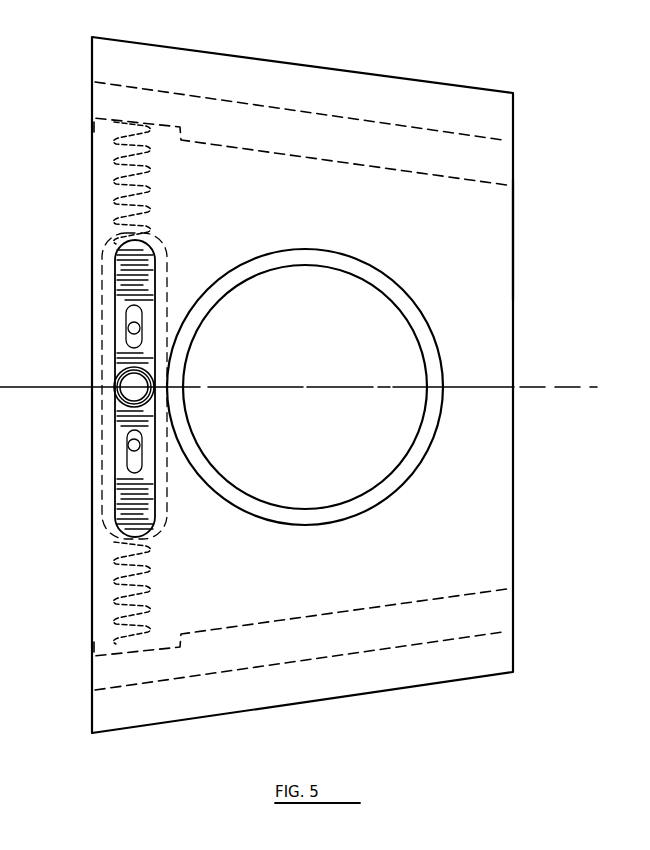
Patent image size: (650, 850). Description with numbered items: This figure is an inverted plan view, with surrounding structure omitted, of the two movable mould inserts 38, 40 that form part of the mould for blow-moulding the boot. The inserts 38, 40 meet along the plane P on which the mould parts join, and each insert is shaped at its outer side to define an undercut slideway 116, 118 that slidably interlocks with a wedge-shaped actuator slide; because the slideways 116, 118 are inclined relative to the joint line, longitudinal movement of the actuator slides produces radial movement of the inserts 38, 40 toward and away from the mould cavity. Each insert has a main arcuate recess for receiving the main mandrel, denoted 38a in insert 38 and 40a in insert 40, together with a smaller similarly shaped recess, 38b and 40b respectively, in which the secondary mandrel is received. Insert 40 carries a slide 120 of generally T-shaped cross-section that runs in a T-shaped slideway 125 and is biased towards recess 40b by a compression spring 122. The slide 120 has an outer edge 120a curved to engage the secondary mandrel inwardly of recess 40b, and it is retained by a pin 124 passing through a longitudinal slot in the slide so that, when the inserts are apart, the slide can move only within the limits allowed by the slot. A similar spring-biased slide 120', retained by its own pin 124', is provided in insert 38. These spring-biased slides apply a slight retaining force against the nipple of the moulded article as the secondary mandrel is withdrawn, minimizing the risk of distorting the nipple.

The mould insert 38 is at (518, 513).
The mould insert 40 is at (518, 305).
The main arcuate recess 38a is at (417, 436).
The main arcuate recess 40a is at (380, 293).
The secondary recess 38b is at (150, 392).
The secondary recess 40b is at (153, 383).
The undercut slideway 116 is at (380, 630).
The undercut slideway 118 is at (367, 135).
The slide 120 is at (96, 388).
The spring biassed slide 120' is at (100, 470).
The outer edge 120a is at (116, 383).
The compression spring 122 is at (118, 162).
The pin 124 is at (89, 326).
The pin 124' is at (92, 451).
The T-shaped slideway 125 is at (102, 273).
The plane on which the mould parts meet P is at (549, 382).